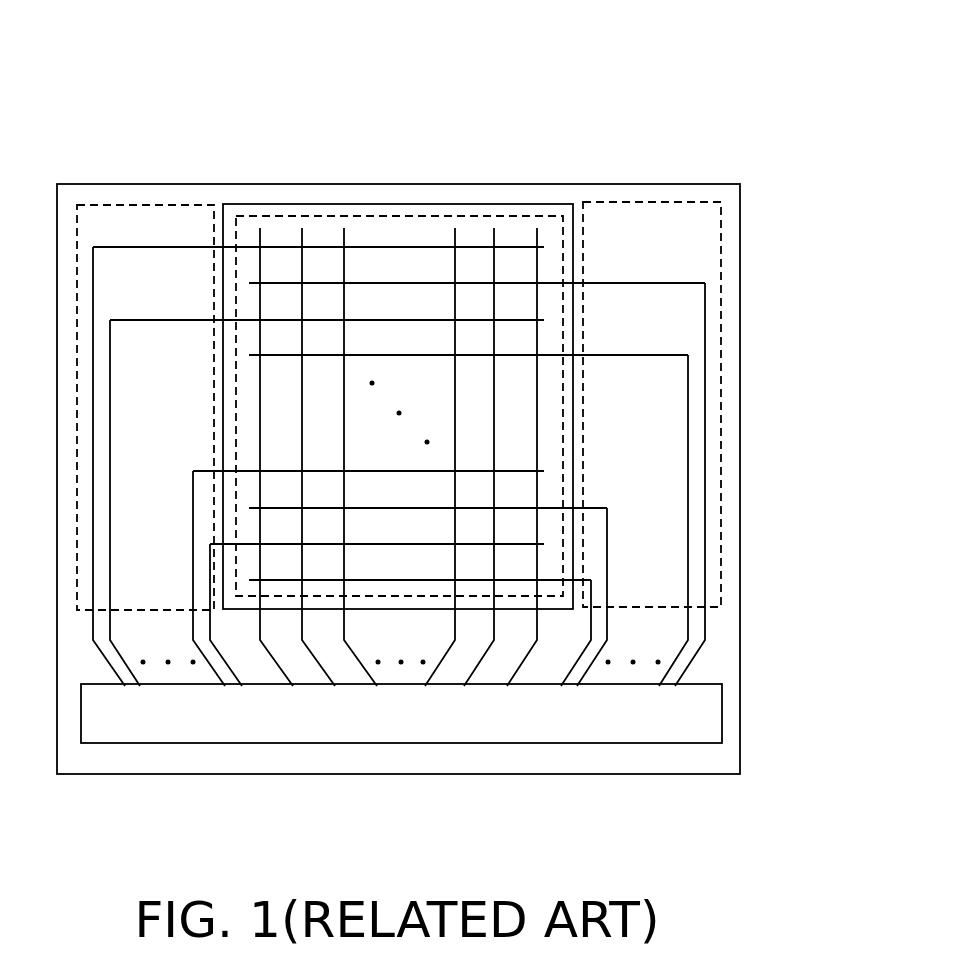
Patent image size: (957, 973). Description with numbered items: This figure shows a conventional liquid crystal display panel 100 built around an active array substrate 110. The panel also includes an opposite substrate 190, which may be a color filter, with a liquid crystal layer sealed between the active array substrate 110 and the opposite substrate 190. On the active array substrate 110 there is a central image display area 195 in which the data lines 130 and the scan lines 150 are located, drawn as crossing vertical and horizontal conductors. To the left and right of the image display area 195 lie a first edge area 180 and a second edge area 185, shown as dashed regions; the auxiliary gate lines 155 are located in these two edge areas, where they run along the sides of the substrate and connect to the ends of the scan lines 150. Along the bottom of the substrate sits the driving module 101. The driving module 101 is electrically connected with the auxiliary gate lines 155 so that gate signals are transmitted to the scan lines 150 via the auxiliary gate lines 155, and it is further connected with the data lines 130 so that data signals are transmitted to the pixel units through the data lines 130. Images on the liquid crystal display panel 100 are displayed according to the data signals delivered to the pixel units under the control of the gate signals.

The liquid crystal display panel 100 is at (434, 394).
The driving module 101 is at (722, 708).
The active array substrate 110 is at (397, 184).
The data lines 130 is at (453, 490).
The scan lines 150 is at (422, 356).
The auxiliary gate lines 155 is at (110, 379).
The first edge area 180 is at (147, 203).
The second edge area 185 is at (652, 201).
The opposite substrate 190 is at (515, 203).
The image display area 195 is at (331, 210).